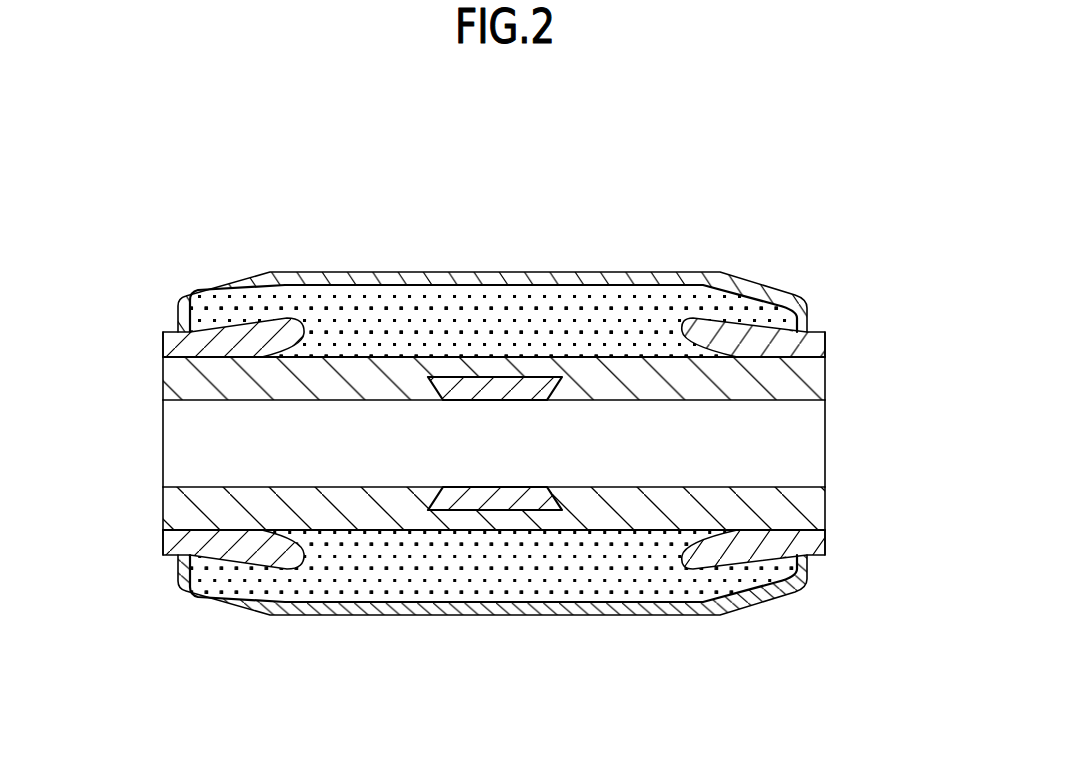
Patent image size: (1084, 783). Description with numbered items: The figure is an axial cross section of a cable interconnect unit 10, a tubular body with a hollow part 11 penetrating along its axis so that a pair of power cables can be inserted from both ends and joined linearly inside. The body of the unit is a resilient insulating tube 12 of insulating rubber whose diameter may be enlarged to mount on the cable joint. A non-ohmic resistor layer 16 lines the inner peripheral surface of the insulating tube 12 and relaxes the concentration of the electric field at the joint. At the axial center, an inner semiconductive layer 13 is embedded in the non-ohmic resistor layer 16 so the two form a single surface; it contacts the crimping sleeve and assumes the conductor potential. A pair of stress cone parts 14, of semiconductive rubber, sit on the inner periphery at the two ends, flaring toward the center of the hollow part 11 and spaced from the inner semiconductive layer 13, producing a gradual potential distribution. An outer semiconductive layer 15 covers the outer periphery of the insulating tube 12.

The cable interconnect unit 10 is at (504, 351).
The hollow part 11 is at (563, 443).
The insulating tube 12 is at (493, 401).
The inner semiconductive layer 13 is at (495, 352).
The stress cone part 14 is at (498, 416).
The outer semiconductive layer 15 is at (492, 405).
The non-ohmic resistor layer 16 is at (496, 443).